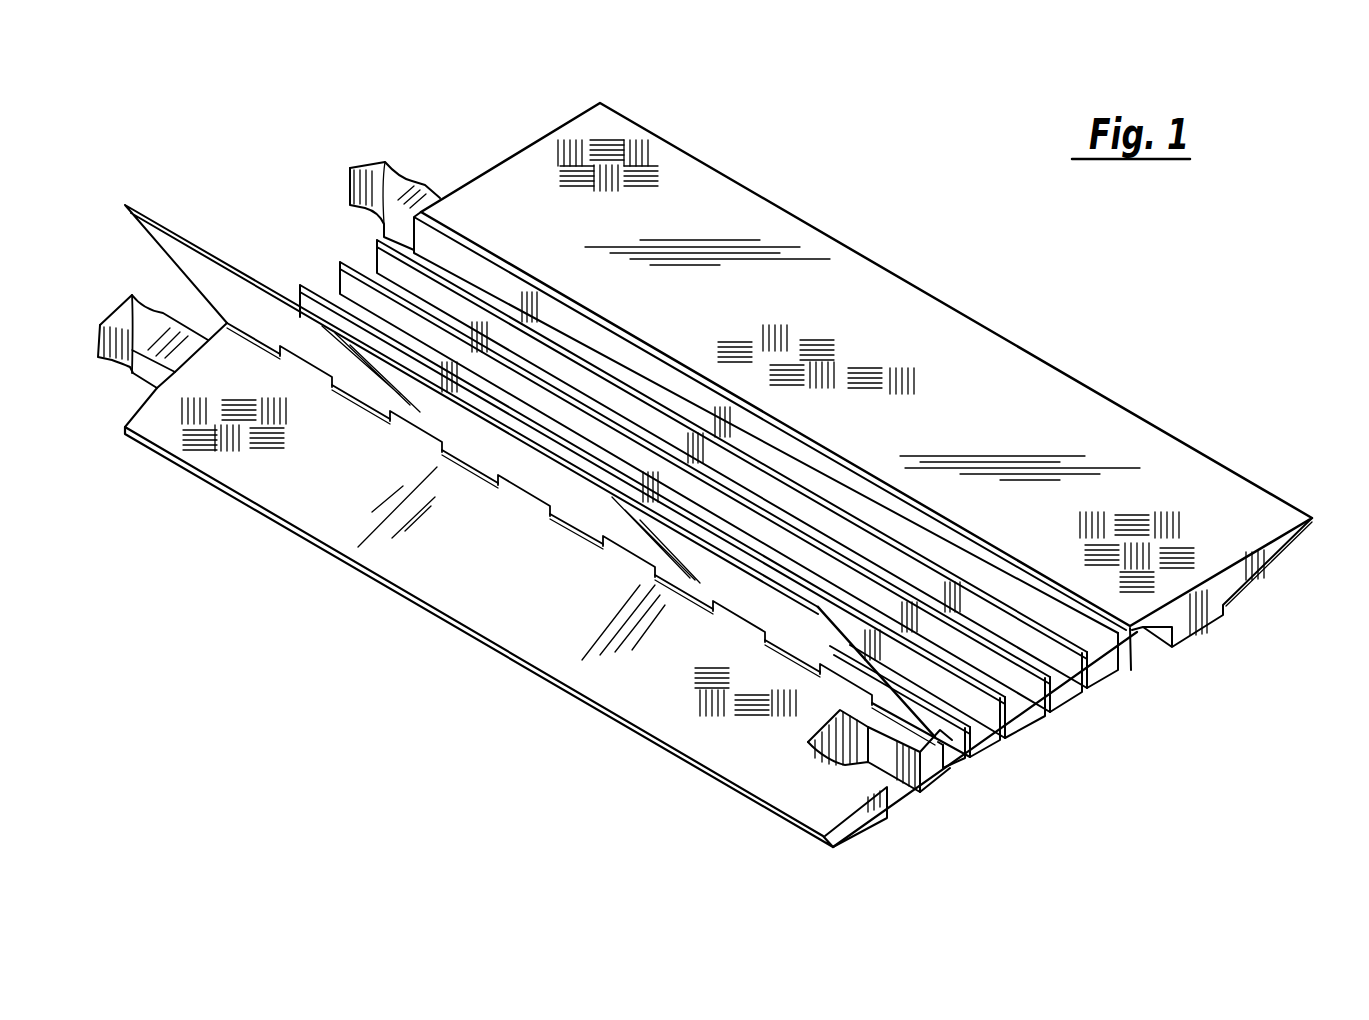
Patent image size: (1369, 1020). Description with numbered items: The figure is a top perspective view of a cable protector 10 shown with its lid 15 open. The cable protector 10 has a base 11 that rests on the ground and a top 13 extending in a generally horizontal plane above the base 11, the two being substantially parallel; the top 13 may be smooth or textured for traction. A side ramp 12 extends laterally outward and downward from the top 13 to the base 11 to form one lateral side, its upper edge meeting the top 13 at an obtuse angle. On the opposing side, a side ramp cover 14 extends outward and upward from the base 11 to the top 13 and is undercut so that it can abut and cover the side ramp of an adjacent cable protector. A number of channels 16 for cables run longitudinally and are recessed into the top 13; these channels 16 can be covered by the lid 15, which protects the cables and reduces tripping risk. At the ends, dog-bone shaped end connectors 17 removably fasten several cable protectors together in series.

The cable protector 10 is at (818, 192).
The base 11 is at (1198, 630).
The side ramp 12 is at (545, 605).
The top 13 is at (862, 365).
The side ramp cover 14 is at (1252, 556).
The lid 15 is at (247, 273).
The channels 16 is at (1010, 738).
The end connectors 17 is at (365, 162).